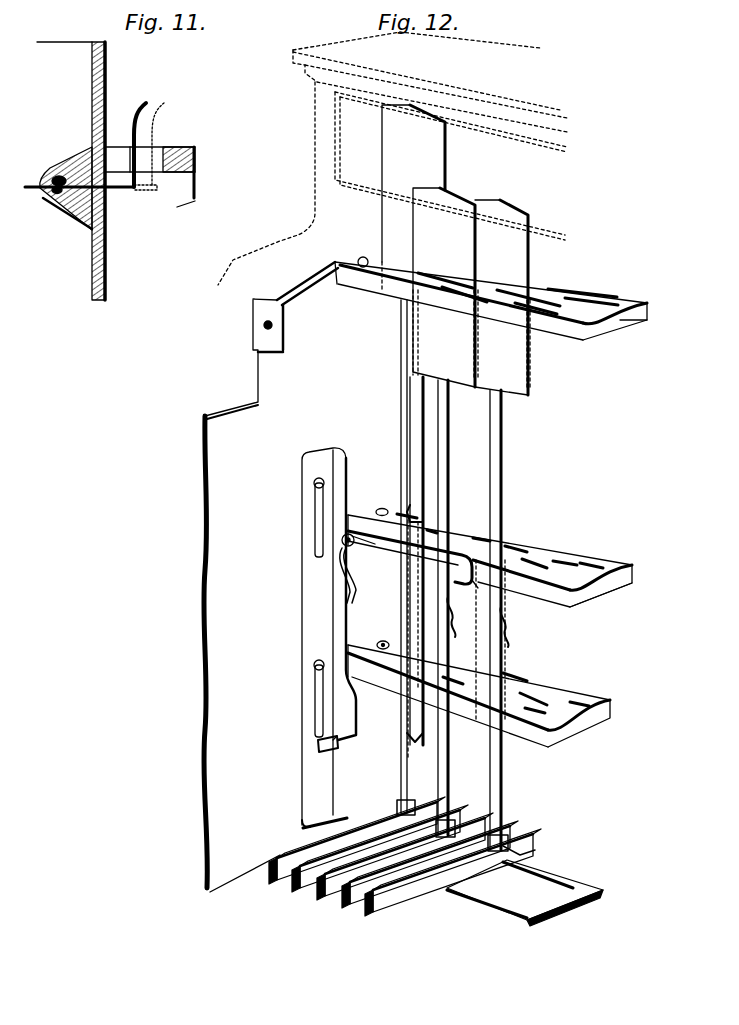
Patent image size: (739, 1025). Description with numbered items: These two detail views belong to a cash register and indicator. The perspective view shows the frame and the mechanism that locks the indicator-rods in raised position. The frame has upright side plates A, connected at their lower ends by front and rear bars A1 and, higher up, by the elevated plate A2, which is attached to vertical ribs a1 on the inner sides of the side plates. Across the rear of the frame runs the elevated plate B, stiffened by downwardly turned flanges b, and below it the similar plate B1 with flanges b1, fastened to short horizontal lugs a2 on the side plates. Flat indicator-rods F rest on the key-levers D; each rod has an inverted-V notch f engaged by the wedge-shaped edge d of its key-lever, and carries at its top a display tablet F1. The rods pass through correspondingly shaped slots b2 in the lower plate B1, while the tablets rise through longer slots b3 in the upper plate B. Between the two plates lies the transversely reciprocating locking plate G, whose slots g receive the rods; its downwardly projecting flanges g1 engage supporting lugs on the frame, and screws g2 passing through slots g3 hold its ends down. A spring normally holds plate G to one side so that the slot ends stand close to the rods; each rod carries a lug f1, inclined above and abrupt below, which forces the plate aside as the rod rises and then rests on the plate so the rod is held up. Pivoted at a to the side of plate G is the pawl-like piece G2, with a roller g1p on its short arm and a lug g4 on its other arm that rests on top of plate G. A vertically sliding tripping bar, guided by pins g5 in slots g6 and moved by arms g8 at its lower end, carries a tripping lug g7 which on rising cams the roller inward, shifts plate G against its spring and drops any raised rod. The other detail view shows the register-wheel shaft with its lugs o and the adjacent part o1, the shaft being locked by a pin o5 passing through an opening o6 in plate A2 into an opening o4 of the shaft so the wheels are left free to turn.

In FIG. 11, the elevated plate A2 is at (107, 228).
In FIG. 11, the shaft lug o is at (62, 202).
In FIG. 11, the opening in plate o6 is at (84, 214).
In FIG. 11, the aperture o1 is at (58, 176).
In FIG. 11, the shaft opening o4 is at (36, 187).
In FIG. 11, the locking pin o5 is at (149, 140).
In FIG. 12, the side frame-plate A is at (271, 577).
In FIG. 12, the tablet or display-plate F1 is at (382, 170).
In FIG. 12, the indicator-rod F is at (409, 445).
In FIG. 12, the rod lug f1 is at (425, 515).
In FIG. 12, the inverted-V-shaped notch f is at (418, 743).
In FIG. 12, the upper guide-plate B is at (376, 260).
In FIG. 12, the tablet slot b3 is at (545, 284).
In FIG. 12, the downwardly-turned flange b is at (632, 320).
In FIG. 12, the swinging pawl-piece G2 is at (302, 590).
In FIG. 12, the guide slot g6 is at (344, 599).
In FIG. 12, the arm or lug g8 is at (338, 745).
In FIG. 12, the lug on pawl-piece g4 is at (316, 523).
In FIG. 12, the guide pin or screw g5 is at (314, 484).
In FIG. 12, the locking-plate G is at (481, 531).
In FIG. 12, the rod slot in locking-plate g is at (500, 541).
In FIG. 12, the downwardly-projecting flange g1 is at (628, 578).
In FIG. 12, the pivot a is at (462, 591).
In FIG. 12, the horizontal lug a2 is at (396, 560).
In FIG. 12, the tripping-lug g7 is at (354, 592).
In FIG. 12, the roller g1p is at (366, 535).
In FIG. 12, the holding screw g2 is at (386, 508).
In FIG. 12, the screw slot g3 is at (378, 510).
In FIG. 12, the lower guide-plate B1 is at (479, 696).
In FIG. 12, the rod slot b2 is at (526, 684).
In FIG. 12, the flange of lower plate b1 is at (604, 719).
In FIG. 12, the key-lever D is at (405, 856).
In FIG. 12, the wedge-shaped edge d is at (410, 812).
In FIG. 12, the vertical flange or rib a1 is at (560, 874).
In FIG. 12, the connecting bar A1 is at (527, 920).